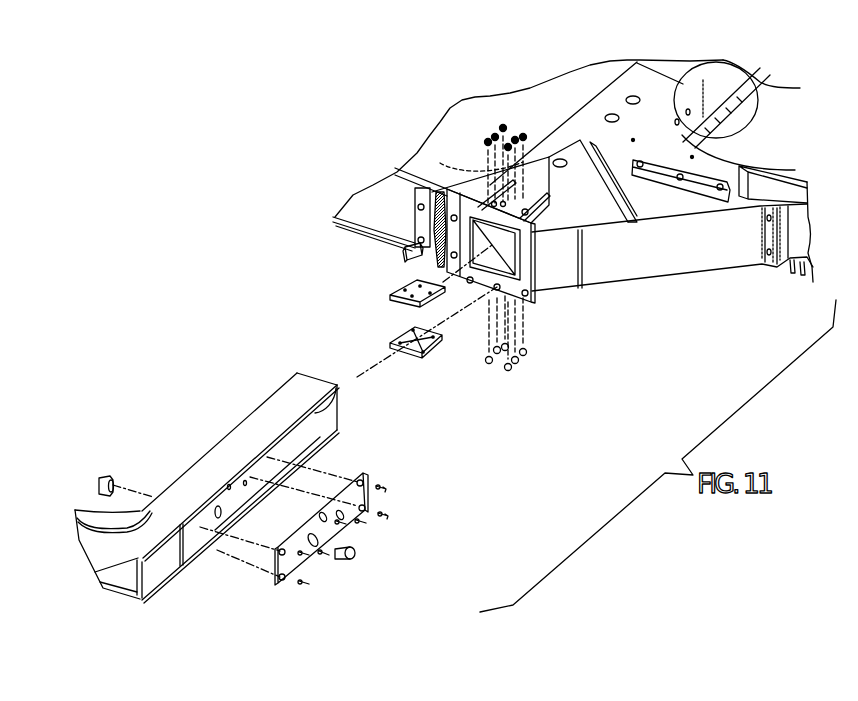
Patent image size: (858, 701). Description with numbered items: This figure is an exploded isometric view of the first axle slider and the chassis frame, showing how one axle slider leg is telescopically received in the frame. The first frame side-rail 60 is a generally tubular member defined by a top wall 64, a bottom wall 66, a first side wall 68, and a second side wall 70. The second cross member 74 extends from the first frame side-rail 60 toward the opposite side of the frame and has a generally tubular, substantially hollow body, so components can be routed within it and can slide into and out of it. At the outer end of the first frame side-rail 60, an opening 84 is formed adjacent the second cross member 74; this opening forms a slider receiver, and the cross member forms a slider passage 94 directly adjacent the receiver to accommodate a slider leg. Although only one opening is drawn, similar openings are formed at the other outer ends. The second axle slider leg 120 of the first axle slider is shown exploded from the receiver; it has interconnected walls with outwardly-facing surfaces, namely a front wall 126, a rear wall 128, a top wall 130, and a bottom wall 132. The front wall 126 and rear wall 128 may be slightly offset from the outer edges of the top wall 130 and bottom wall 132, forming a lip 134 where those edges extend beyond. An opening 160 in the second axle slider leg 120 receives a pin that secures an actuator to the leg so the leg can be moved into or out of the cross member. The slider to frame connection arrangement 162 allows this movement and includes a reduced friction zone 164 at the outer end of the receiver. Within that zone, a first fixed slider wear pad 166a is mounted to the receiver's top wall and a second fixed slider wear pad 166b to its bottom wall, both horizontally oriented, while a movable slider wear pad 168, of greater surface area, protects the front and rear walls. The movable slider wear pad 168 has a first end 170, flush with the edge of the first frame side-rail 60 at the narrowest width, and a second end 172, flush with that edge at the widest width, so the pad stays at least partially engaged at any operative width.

The first frame side-rail 60 is at (378, 203).
The top wall 64 is at (418, 168).
The bottom wall 66 is at (395, 233).
The first side wall 68 is at (367, 213).
The second side wall 70 is at (433, 160).
The second cross member 74 is at (752, 100).
The opening 84 is at (487, 229).
The slider passage 94 is at (513, 243).
The second axle slider leg 120 is at (232, 472).
The front wall 126 is at (164, 488).
The rear wall 128 is at (320, 437).
The top wall 130 is at (223, 453).
The bottom wall 132 is at (172, 578).
The lip 134 is at (336, 388).
The opening 160 is at (222, 512).
The slider to frame connection arrangement 162 is at (392, 372).
The reduced friction zone 164 is at (228, 424).
The first fixed slider wear pad 166a is at (418, 288).
The second fixed slider wear pad 166b is at (443, 337).
The movable slider wear pad 168 is at (332, 528).
The first end 170 is at (273, 578).
The second end 172 is at (369, 487).